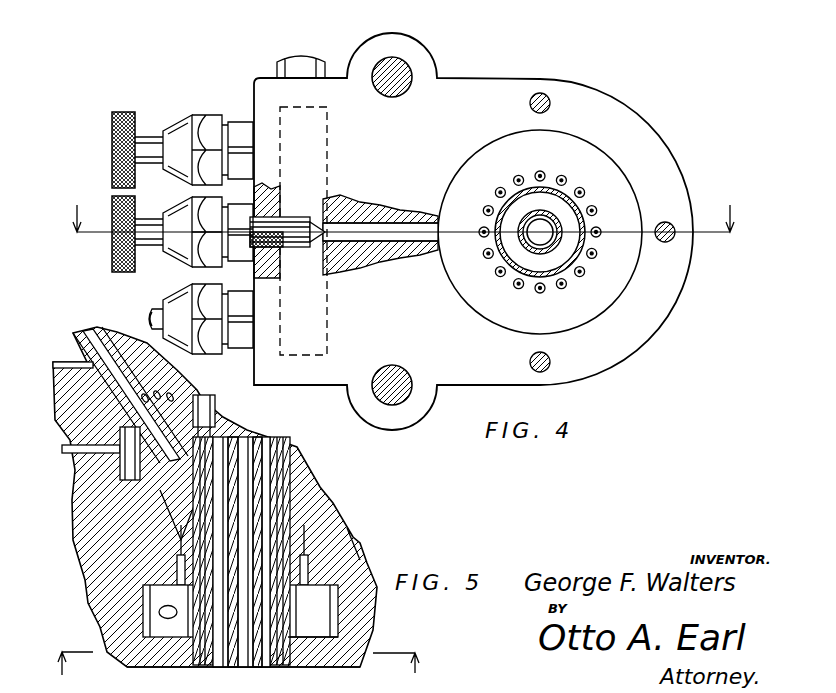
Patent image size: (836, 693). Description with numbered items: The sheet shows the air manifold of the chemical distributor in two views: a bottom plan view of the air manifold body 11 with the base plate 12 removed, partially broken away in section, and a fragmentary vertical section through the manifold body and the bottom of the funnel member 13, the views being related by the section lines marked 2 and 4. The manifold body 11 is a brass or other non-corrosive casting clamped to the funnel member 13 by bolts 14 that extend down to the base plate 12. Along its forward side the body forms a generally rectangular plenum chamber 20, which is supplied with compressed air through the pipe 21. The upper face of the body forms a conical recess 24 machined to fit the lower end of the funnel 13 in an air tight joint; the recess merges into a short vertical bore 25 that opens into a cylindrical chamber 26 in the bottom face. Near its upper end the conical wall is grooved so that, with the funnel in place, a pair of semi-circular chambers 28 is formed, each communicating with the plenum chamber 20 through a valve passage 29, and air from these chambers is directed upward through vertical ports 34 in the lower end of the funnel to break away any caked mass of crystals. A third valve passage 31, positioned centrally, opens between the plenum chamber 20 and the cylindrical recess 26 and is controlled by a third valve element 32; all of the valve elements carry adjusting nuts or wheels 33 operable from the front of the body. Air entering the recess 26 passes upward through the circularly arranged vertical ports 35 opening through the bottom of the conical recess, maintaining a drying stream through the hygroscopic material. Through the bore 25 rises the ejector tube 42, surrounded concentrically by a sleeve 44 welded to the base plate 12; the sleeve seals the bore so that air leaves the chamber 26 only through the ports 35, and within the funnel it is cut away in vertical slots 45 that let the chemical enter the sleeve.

In FIG. 4, the air manifold body member 11 is at (680, 297).
In FIG. 5, the air manifold body member 11 is at (98, 548).
In FIG. 5, the base plate 12 is at (348, 658).
In FIG. 5, the chemical feeding funnel member 13 is at (105, 340).
In FIG. 4, the bolts 14 is at (398, 72).
In FIG. 4, the plenum chamber 20 is at (308, 262).
In FIG. 4, the pipe 21 is at (285, 66).
In FIG. 5, the conical recess 24 is at (75, 408).
In FIG. 5, the vertical bore 25 is at (178, 568).
In FIG. 4, the cylindrical chamber 26 is at (608, 305).
In FIG. 5, the cylindrical chamber 26 is at (330, 623).
In FIG. 5, the semi-circular chambers 28 is at (82, 484).
In FIG. 5, the valve passage 29 is at (73, 450).
In FIG. 4, the third valve passage 31 is at (390, 224).
In FIG. 5, the third valve passage 31 is at (163, 615).
In FIG. 4, the third valve element 32 is at (297, 220).
In FIG. 4, the adjusting nuts or wheels 33 is at (137, 186).
In FIG. 5, the vertical ports 34 is at (145, 420).
In FIG. 4, the vertical ports 35 is at (593, 207).
In FIG. 5, the vertical ports 35 is at (347, 528).
In FIG. 4, the ejector tube 42 is at (527, 253).
In FIG. 5, the ejector tube 42 is at (265, 450).
In FIG. 4, the sleeve 44 is at (502, 257).
In FIG. 5, the sleeve 44 is at (293, 469).
In FIG. 5, the vertical slots 45 is at (198, 412).
In FIG. 4, the section line 2- 2 is at (400, 207).
In FIG. 5, the section line 4- 4 is at (246, 671).